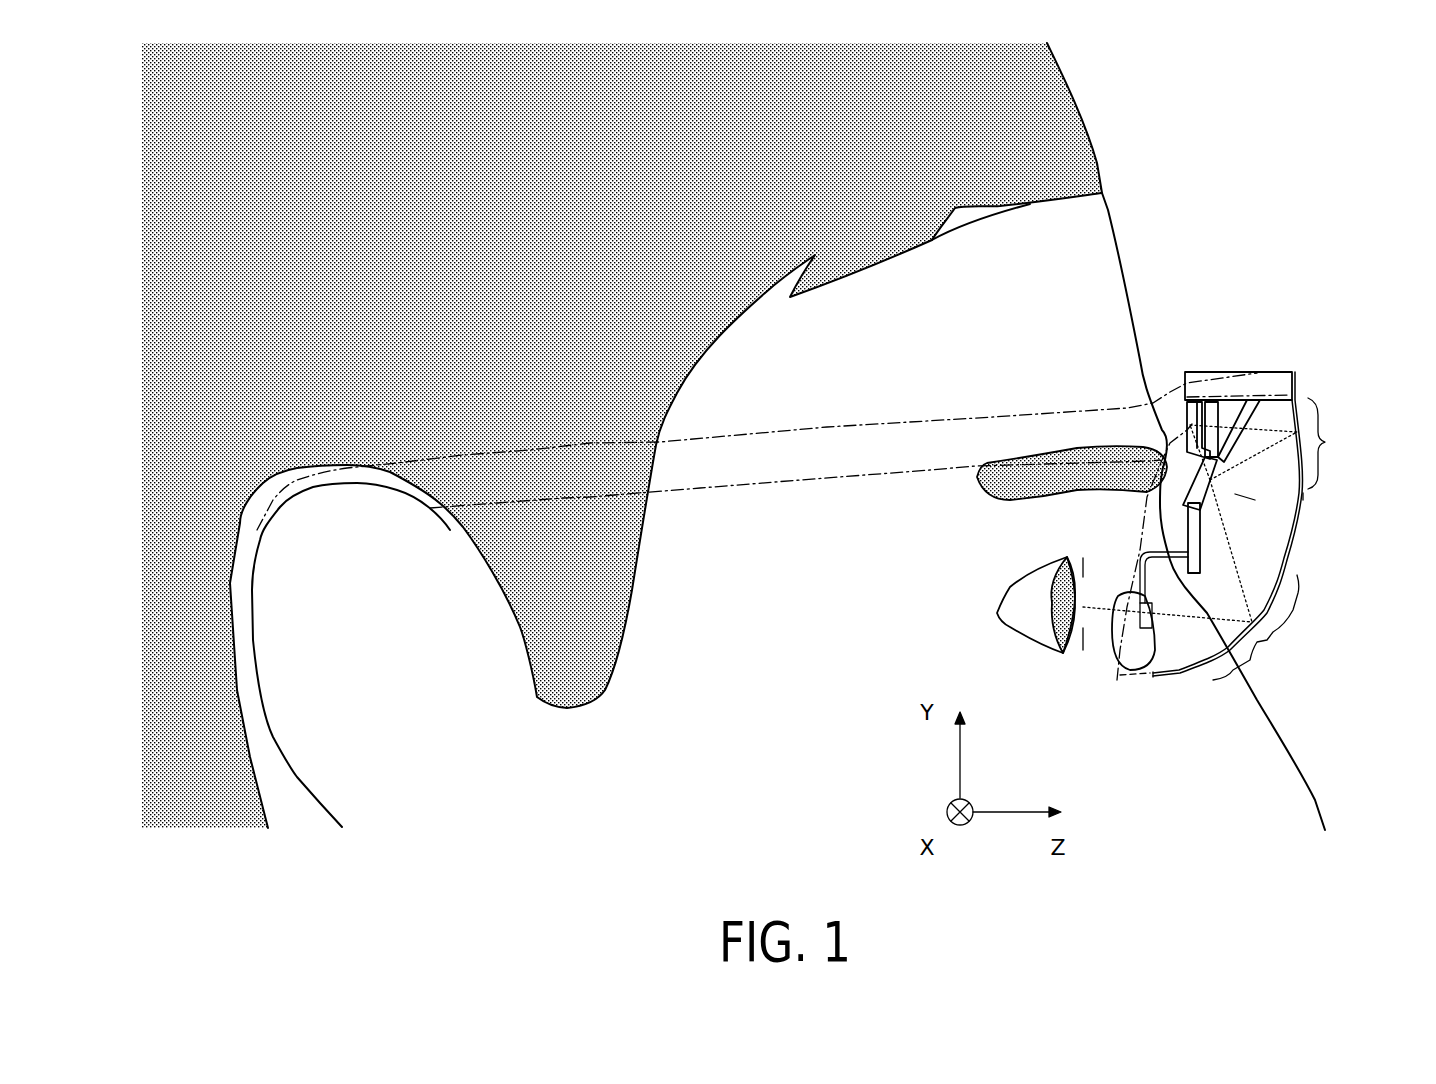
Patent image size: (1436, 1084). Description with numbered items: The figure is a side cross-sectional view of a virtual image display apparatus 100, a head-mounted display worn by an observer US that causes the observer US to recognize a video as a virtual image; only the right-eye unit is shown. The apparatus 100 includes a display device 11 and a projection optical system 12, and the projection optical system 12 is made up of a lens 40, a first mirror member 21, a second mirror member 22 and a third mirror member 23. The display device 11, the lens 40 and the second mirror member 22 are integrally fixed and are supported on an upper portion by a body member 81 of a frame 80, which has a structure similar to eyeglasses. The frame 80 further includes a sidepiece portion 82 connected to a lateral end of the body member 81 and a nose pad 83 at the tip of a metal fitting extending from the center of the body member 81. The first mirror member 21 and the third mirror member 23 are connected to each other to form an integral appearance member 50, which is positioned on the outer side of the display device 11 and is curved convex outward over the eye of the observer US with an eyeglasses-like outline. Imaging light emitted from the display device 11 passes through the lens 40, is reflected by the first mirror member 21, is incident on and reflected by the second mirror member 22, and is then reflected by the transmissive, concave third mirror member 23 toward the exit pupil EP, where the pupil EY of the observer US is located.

The virtual image display apparatus 100 is at (1254, 499).
The observer US is at (1138, 328).
The frame 80 is at (1017, 413).
The display device 11 is at (1205, 402).
The lens 40 is at (1209, 400).
The body member 81 is at (1247, 370).
The projection optical system 12 is at (1273, 413).
The first mirror member 21 is at (1337, 443).
The second mirror member 22 is at (1225, 492).
The third mirror member 23 is at (1259, 627).
The appearance member 50 is at (1315, 540).
The sidepiece portion 82 is at (930, 470).
The nose pad 83 is at (1142, 658).
The pupil EY is at (1072, 603).
The exit pupil EP is at (1088, 583).